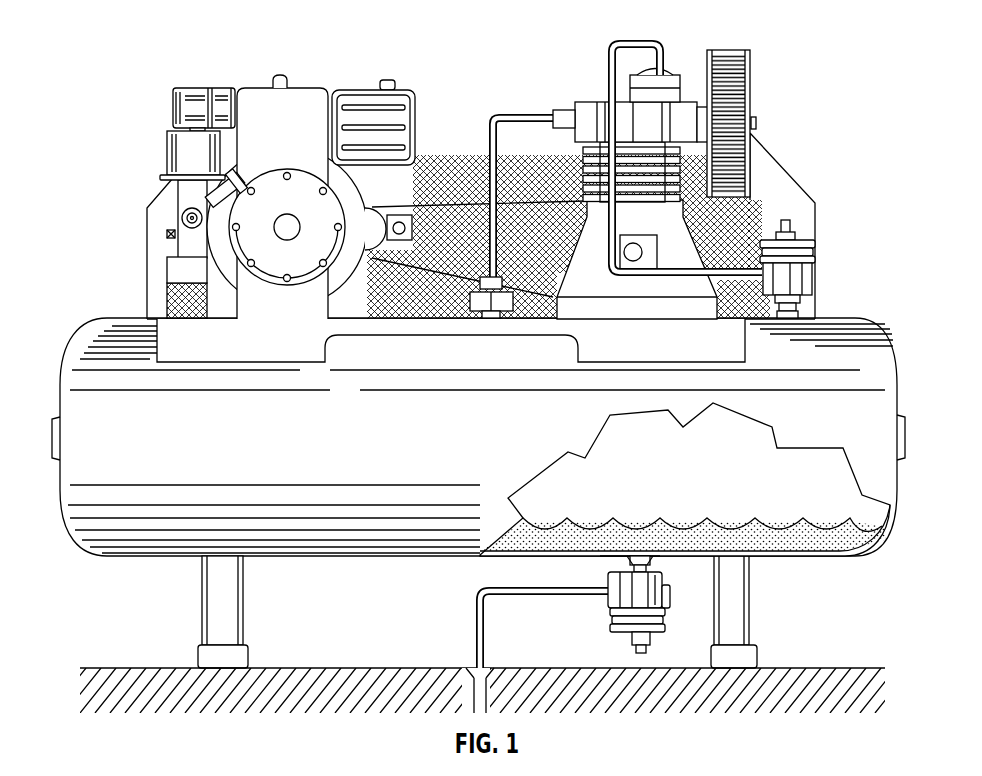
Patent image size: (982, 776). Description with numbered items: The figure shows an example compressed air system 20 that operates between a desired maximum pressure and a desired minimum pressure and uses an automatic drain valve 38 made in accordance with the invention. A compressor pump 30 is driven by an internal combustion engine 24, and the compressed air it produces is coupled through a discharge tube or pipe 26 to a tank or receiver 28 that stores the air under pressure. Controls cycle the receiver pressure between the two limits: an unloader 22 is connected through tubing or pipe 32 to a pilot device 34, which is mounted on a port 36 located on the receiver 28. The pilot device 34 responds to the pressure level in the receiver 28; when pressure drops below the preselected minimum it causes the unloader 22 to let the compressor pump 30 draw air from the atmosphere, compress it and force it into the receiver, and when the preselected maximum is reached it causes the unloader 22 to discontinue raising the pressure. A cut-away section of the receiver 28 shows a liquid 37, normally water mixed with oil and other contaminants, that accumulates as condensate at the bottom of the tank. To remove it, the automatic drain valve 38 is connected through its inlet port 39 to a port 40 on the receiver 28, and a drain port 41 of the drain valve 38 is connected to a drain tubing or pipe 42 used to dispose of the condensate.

The compressed air system 20 is at (488, 360).
The unloader 22 is at (481, 216).
The internal combustion engine 24 is at (287, 163).
The discharge tube or pipe 26 is at (522, 165).
The tank or receiver 28 is at (477, 464).
The compressor pump 30 is at (687, 140).
The tubing or pipe 32 is at (801, 161).
The pilot device 34 is at (842, 256).
The port 36 is at (850, 299).
The liquid 37 is at (693, 512).
The automatic drain valve 38 is at (543, 634).
The inlet port 39 is at (534, 576).
The port 40 is at (669, 574).
The drain port 41 is at (611, 613).
The drain tubing or pipe 42 is at (493, 652).